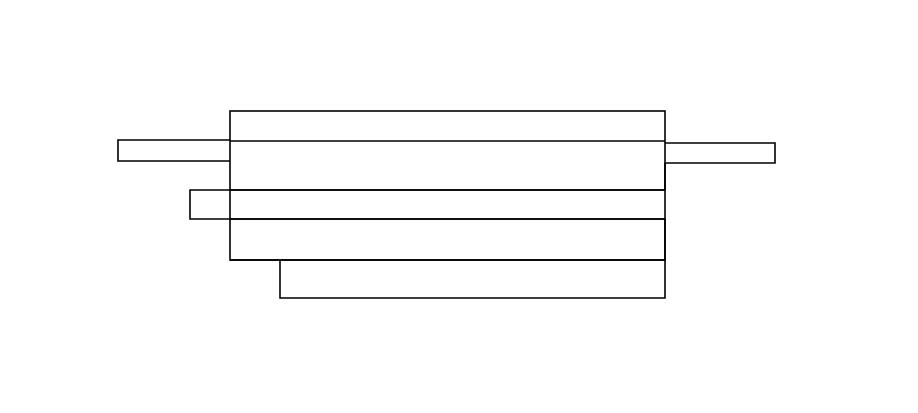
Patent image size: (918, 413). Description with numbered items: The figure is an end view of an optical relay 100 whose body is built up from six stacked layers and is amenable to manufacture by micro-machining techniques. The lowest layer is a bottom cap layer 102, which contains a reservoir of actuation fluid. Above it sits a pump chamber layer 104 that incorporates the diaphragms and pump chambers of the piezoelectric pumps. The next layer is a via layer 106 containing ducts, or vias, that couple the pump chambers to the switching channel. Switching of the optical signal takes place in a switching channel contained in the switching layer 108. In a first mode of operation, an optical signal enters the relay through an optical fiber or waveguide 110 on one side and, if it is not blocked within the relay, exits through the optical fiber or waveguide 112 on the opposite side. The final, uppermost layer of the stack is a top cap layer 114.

The optical relay 100 is at (190, 43).
The bottom cap layer 102 is at (595, 300).
The pump chamber layer 104 is at (665, 242).
The via layer 106 is at (190, 204).
The switching layer 108 is at (665, 177).
The optical fiber or waveguide 110 is at (145, 140).
The optical fiber or waveguide 112 is at (740, 142).
The top cap layer 114 is at (297, 111).